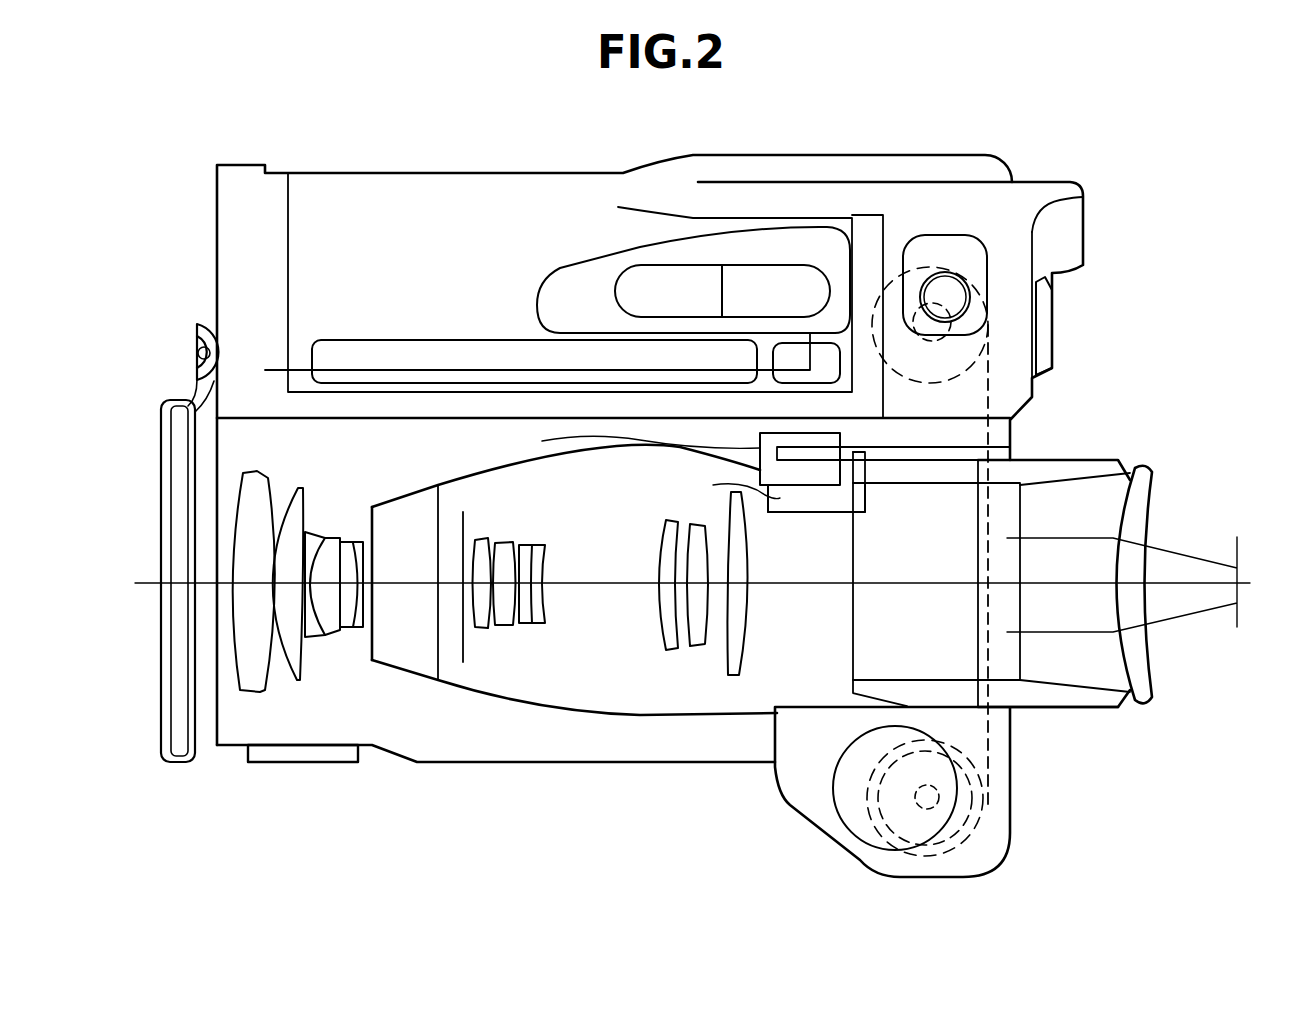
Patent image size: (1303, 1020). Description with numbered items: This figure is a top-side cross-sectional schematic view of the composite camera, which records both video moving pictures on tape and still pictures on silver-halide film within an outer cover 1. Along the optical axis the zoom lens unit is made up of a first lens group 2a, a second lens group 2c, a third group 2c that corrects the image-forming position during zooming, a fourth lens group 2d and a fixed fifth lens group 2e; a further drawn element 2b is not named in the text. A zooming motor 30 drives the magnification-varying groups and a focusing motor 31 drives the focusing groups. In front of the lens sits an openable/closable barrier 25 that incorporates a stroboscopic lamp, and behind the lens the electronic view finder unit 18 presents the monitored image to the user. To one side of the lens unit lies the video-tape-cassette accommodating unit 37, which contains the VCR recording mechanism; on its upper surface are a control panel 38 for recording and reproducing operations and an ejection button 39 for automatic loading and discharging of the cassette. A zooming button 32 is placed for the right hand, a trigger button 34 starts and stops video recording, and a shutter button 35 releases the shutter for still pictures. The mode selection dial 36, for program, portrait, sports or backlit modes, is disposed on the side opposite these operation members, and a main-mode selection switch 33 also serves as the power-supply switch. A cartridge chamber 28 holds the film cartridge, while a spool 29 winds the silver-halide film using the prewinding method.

The outer cover 1 is at (545, 765).
The first lens group 2a is at (255, 698).
The second lens group 2b is at (335, 640).
The second lens group 2c is at (512, 640).
The fourth lens group 2d is at (668, 652).
The fifth lens group 2e is at (735, 678).
The electronic view finder unit 18 is at (1083, 470).
The openable/closable barrier 25 is at (184, 765).
The cartridge chamber 28 is at (983, 810).
The spool 29 is at (987, 300).
The zooming motor 30 is at (833, 440).
The focusing motor 31 is at (867, 500).
The zooming button 32 is at (762, 265).
The main-mode selection switch 33 is at (343, 765).
The trigger button 34 is at (1046, 325).
The shutter button 35 is at (945, 272).
The mode selection dial 36 is at (850, 803).
The video-tape-cassette accommodating unit 37 is at (437, 205).
The control panel 38 is at (367, 350).
The ejection button 39 is at (830, 350).